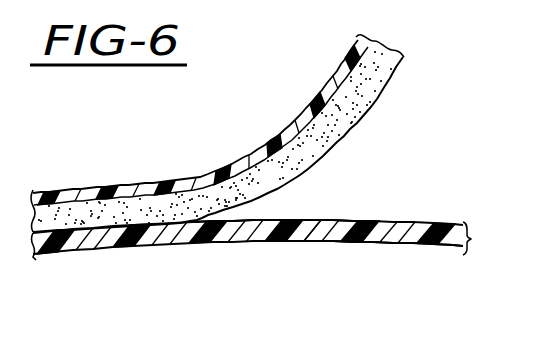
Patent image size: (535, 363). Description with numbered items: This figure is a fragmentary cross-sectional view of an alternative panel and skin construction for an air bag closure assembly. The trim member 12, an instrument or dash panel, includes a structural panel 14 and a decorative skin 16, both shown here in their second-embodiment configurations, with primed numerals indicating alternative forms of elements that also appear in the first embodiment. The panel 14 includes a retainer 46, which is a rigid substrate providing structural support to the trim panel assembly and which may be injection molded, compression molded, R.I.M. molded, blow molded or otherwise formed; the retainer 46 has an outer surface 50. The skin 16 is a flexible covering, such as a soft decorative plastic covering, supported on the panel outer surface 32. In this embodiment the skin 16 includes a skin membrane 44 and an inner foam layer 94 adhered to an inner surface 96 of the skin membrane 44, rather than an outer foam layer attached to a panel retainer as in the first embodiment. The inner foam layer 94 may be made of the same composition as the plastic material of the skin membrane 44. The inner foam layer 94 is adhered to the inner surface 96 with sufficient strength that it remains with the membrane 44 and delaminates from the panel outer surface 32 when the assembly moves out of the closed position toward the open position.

The decorative skin 16 is at (318, 90).
The skin membrane 44 is at (171, 193).
The inner surface of the skin membrane 96 is at (282, 160).
The inner foam layer 94 is at (348, 113).
The structural panel 14 is at (406, 216).
The panel outer surface 32 is at (339, 221).
The retainer 46 is at (297, 236).
The trim member 12 is at (375, 258).
The outer surface of the retainer 50 is at (463, 223).